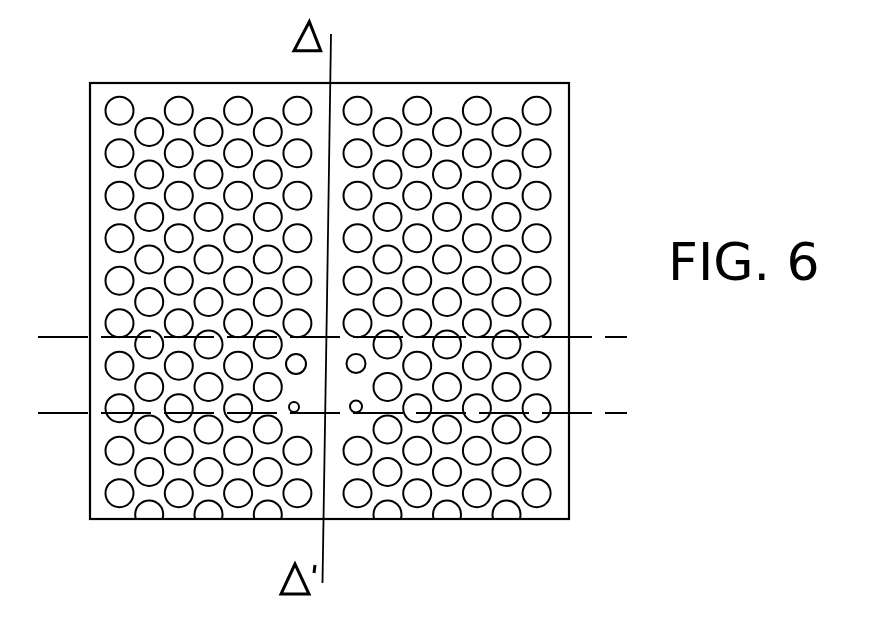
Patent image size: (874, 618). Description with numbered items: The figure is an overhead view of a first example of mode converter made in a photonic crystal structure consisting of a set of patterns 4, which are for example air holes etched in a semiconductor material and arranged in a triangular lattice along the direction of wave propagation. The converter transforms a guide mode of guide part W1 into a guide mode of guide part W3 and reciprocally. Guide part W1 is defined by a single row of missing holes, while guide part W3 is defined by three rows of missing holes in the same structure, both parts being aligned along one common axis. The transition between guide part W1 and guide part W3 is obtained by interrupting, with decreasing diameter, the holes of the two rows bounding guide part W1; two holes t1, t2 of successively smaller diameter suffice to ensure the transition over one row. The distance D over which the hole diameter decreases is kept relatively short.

The patterns 4 is at (120, 155).
The transition hole t1 is at (287, 361).
The transition hole t2 is at (294, 414).
The guide part W1 is at (341, 94).
The guide part W3 is at (334, 483).
The distance D is at (619, 338).